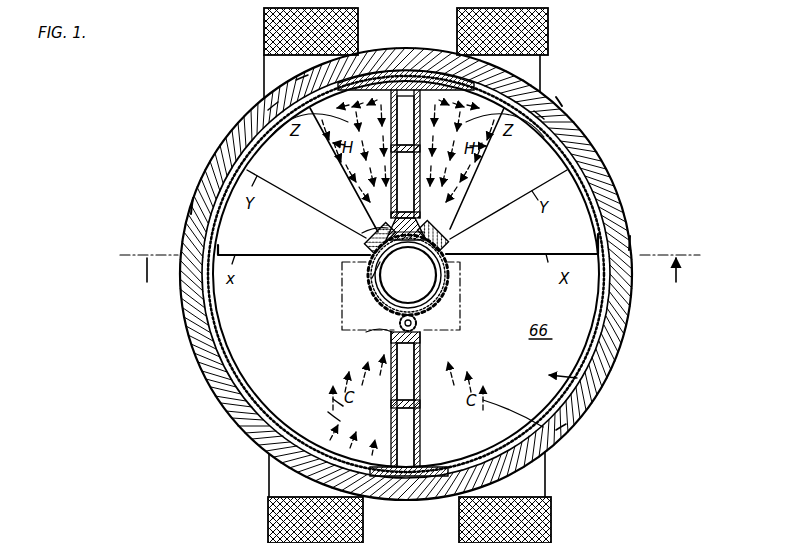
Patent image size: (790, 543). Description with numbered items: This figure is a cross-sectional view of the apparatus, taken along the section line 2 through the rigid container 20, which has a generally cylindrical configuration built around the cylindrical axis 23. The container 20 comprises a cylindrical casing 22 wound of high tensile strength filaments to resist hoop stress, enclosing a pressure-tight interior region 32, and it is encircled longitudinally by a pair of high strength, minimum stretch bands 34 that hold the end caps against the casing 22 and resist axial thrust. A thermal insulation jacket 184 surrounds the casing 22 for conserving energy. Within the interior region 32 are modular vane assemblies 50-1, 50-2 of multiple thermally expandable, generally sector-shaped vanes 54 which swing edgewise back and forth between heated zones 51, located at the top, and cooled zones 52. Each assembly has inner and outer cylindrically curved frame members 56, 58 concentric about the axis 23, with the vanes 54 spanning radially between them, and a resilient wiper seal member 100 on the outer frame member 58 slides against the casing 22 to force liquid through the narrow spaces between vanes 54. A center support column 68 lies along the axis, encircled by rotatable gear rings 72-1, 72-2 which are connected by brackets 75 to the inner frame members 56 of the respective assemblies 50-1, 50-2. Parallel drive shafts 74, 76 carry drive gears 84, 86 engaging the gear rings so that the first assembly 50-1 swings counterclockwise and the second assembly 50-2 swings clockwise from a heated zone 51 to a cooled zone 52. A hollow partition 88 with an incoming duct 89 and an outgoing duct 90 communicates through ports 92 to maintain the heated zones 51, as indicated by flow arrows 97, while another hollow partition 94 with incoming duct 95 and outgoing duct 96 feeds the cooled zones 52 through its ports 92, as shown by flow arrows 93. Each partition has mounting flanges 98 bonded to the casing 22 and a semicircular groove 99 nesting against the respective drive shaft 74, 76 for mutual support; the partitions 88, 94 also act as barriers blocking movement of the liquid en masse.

The rigid container 20 is at (626, 191).
The cylindrical casing 22 is at (613, 333).
The cylindrical axis 23 is at (438, 276).
The interior region 32 is at (594, 390).
The bands 34 is at (263, 31).
The first vane assembly 50-1 is at (327, 170).
The second vane assembly 50-2 is at (485, 168).
The heated zone 51 is at (272, 113).
The cooled zone 52 is at (338, 398).
The vanes 54 is at (541, 73).
The inner frame member 56 is at (366, 258).
The outer frame member 58 is at (194, 205).
The center support column 68 is at (449, 306).
The first pair of gear rings 72-1 is at (448, 290).
The second pair of gear rings 72-2 is at (369, 292).
The drive shaft 74 is at (398, 324).
The bracket 75 is at (373, 279).
The drive shaft 76 is at (420, 230).
The drive gear 84 is at (418, 324).
The drive gear 86 is at (430, 240).
The hollow partition 88 is at (418, 168).
The incoming duct 89 is at (411, 110).
The outgoing duct 90 is at (407, 153).
The ports 92 is at (403, 89).
The flow arrows 93 is at (335, 417).
The hollow partition 94 is at (421, 373).
The incoming duct 95 is at (410, 428).
The outgoing duct 96 is at (412, 386).
The flow arrows 97 is at (301, 83).
The mounting flanges 98 is at (432, 66).
The semicircular groove 99 is at (364, 233).
The wiper seal member 100 is at (222, 150).
The thermal insulation jacket 184 is at (632, 229).
The section line 2- 2 is at (410, 269).